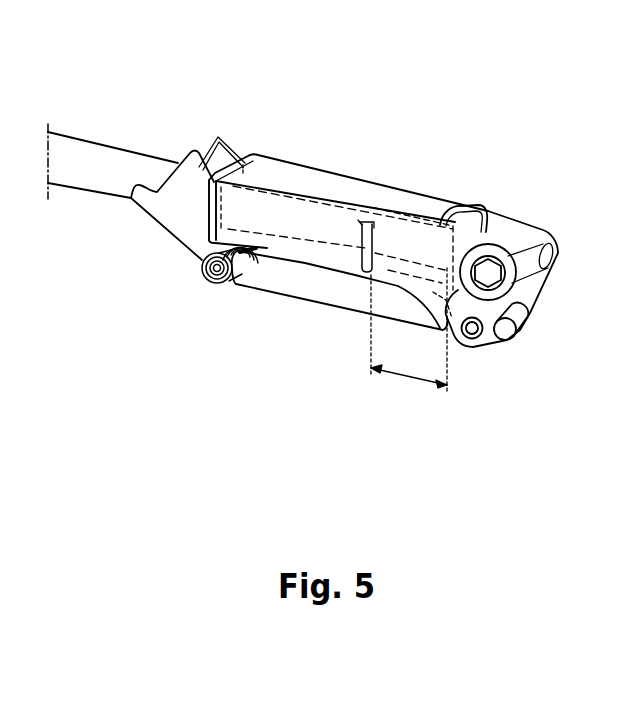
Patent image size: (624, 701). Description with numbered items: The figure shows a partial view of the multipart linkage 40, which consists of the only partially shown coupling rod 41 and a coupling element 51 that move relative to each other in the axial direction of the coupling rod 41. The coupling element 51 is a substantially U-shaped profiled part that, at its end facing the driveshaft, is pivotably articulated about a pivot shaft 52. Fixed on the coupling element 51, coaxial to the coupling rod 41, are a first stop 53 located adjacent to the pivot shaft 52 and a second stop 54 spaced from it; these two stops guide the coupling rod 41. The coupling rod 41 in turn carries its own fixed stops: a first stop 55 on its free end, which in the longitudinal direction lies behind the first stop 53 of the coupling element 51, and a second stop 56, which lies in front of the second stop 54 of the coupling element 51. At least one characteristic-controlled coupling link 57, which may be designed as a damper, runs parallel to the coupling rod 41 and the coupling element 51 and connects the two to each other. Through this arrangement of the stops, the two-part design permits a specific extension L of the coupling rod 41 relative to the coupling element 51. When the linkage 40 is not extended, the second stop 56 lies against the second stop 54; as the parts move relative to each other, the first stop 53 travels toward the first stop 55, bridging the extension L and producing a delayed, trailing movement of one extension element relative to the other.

The multipart linkage 40 is at (349, 127).
The coupling rod 41 is at (77, 162).
The coupling element 51 is at (453, 207).
The pivot shaft 52 is at (533, 232).
The first stop 53 is at (372, 222).
The second stop 54 is at (208, 236).
The first stop 55 is at (486, 206).
The second stop 56 is at (198, 176).
The coupling link 57 is at (340, 267).
The extension L is at (407, 378).